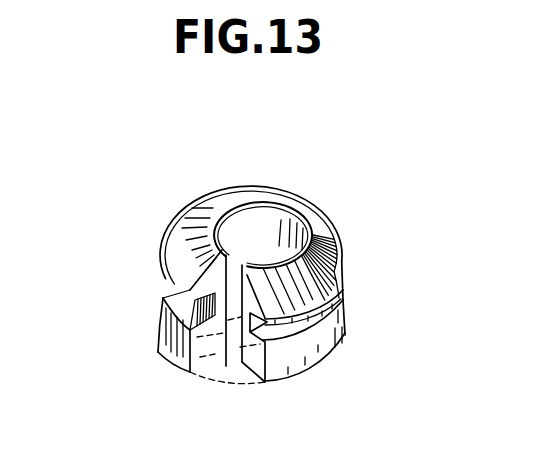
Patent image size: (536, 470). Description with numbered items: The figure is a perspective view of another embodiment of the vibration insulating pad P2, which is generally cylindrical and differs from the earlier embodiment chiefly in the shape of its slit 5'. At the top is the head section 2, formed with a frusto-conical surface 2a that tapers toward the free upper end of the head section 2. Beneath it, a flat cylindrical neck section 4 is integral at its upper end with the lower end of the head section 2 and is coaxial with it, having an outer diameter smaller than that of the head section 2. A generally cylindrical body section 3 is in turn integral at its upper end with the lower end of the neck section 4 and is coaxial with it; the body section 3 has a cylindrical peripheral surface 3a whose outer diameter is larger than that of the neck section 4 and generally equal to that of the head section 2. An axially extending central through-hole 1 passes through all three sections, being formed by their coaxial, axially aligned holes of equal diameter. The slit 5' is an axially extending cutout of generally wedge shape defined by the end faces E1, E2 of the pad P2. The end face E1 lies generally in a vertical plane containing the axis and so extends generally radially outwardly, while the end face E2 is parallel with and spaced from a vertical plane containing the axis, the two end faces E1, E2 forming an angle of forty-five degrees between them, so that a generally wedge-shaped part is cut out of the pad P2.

The axially extending central through-hole 1 is at (245, 222).
The vibration insulating pad P2 is at (340, 227).
The head section 2 is at (337, 254).
The frusto-conical surface 2a is at (177, 244).
The body section 3 is at (338, 342).
The cylindrical peripheral surface 3a is at (166, 333).
The neck section 4 is at (338, 313).
The slit 5' is at (215, 375).
The end face E1 is at (190, 290).
The end face E2 is at (264, 374).